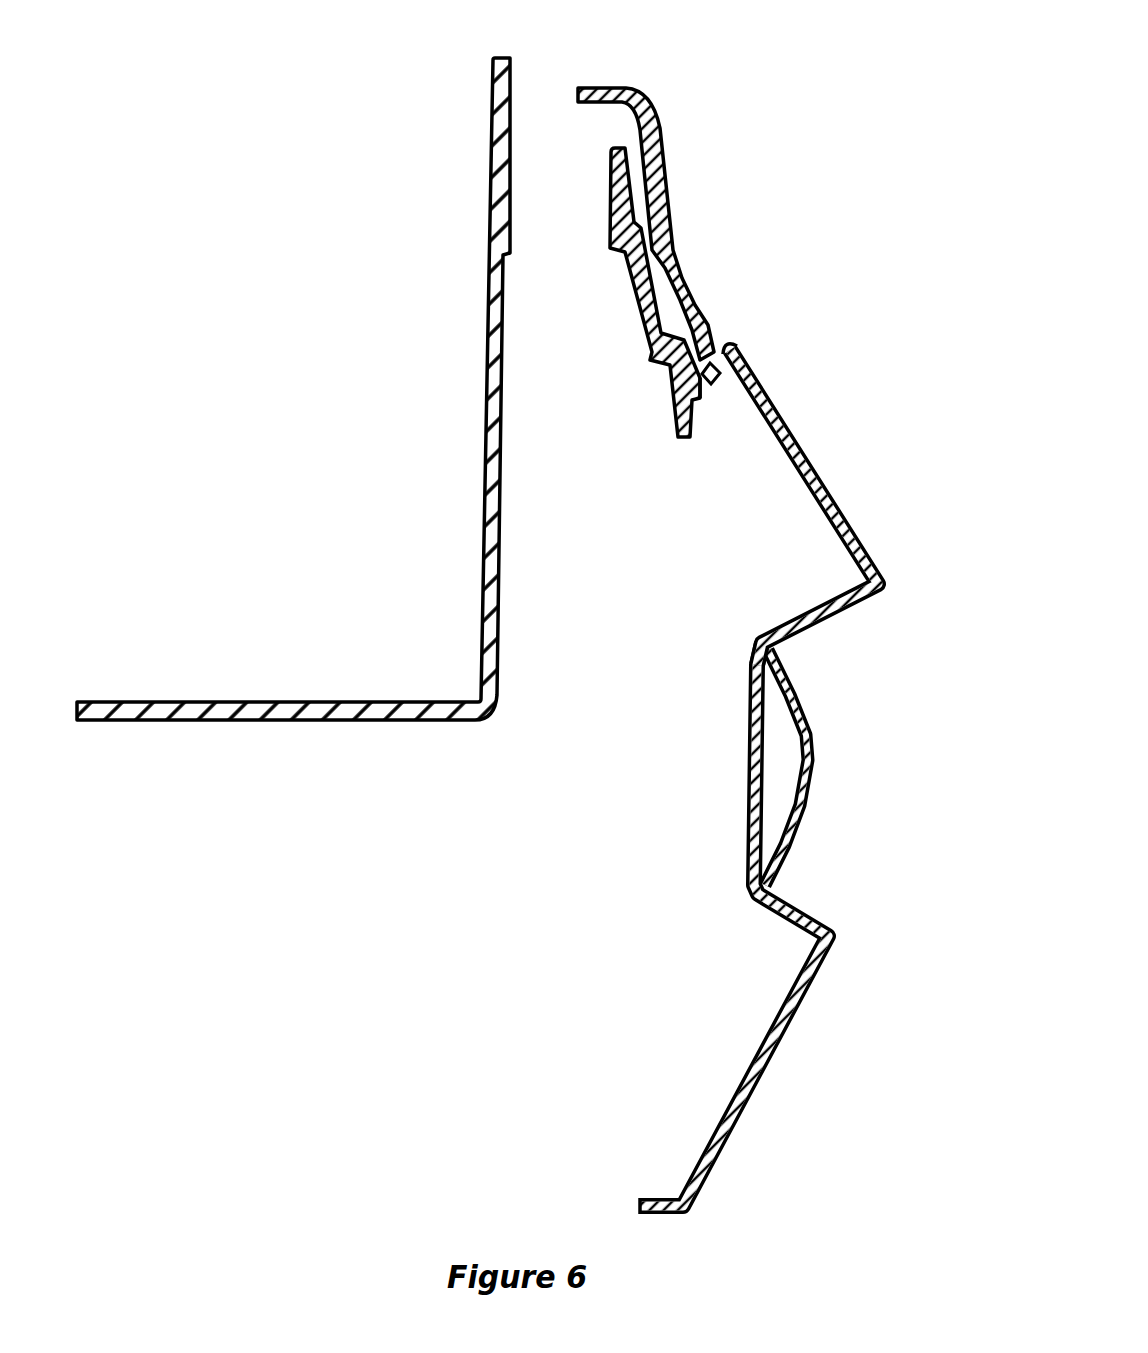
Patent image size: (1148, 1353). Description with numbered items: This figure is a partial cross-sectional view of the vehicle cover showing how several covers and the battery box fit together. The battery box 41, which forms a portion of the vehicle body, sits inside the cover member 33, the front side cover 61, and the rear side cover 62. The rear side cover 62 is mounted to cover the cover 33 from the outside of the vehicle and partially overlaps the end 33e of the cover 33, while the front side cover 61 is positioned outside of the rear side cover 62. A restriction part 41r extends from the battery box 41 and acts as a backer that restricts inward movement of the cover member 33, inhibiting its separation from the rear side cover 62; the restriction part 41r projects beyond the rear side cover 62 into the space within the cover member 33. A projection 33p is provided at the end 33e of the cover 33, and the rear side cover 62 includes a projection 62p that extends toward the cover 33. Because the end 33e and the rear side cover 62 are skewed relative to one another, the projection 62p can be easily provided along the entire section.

The battery box 41 is at (510, 76).
The restriction part 41r is at (613, 166).
The cover member 33 is at (667, 178).
The projection 33p is at (720, 374).
The end 33e is at (703, 378).
The front side cover 61 is at (818, 768).
The rear side cover 62 is at (833, 500).
The projection 62p is at (716, 342).